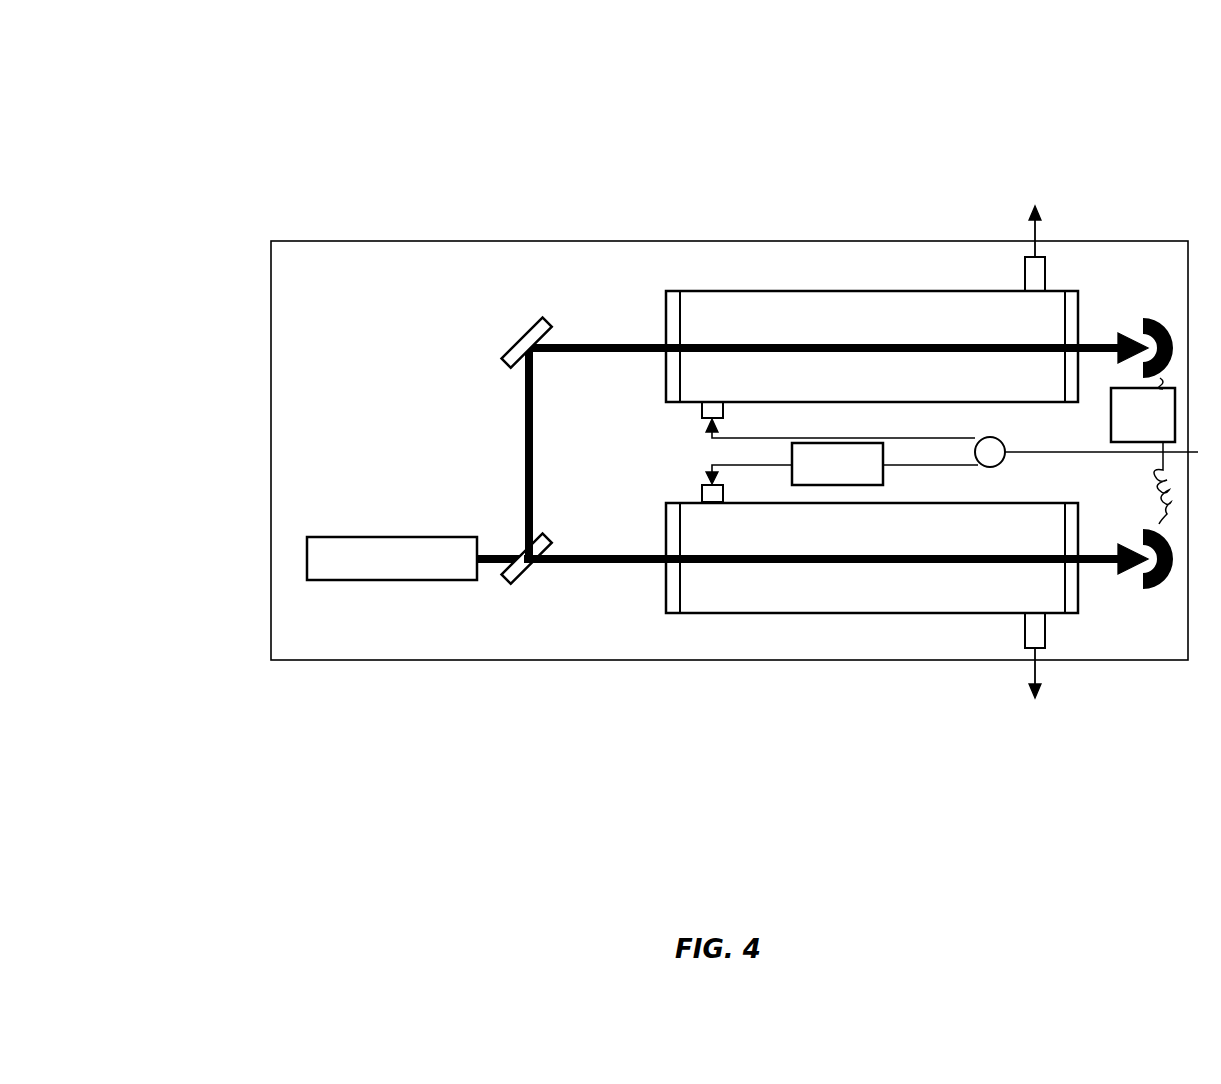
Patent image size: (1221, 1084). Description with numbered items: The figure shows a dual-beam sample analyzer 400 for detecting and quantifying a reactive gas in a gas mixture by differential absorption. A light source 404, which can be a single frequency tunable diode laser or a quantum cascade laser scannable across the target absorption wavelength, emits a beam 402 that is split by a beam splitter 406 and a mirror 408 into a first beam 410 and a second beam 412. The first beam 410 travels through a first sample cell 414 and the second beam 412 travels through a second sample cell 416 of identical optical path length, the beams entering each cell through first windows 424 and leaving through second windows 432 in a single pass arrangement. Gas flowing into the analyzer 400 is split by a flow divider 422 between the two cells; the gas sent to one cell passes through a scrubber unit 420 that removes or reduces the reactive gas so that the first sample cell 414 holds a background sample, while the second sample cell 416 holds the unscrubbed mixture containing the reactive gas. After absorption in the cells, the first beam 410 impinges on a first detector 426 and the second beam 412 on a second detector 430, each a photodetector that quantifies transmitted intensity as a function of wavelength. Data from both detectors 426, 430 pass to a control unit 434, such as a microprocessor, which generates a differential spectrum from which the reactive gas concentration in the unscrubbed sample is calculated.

The analyzer 400 is at (246, 121).
The beam 402 is at (492, 553).
The light source 404 is at (353, 553).
The beam splitter 406 is at (517, 570).
The mirror 408 is at (533, 335).
The first beam 410 is at (602, 565).
The second beam 412 is at (635, 343).
The first sample cell 414 is at (837, 596).
The second sample cell 416 is at (808, 303).
The scrubber unit 420 is at (840, 452).
The flow divider 422 is at (993, 450).
The first windows 424 is at (670, 377).
The first detector 426 is at (1145, 590).
The second detector 430 is at (1145, 317).
The second windows 432 is at (1073, 390).
The control unit 434 is at (1143, 456).